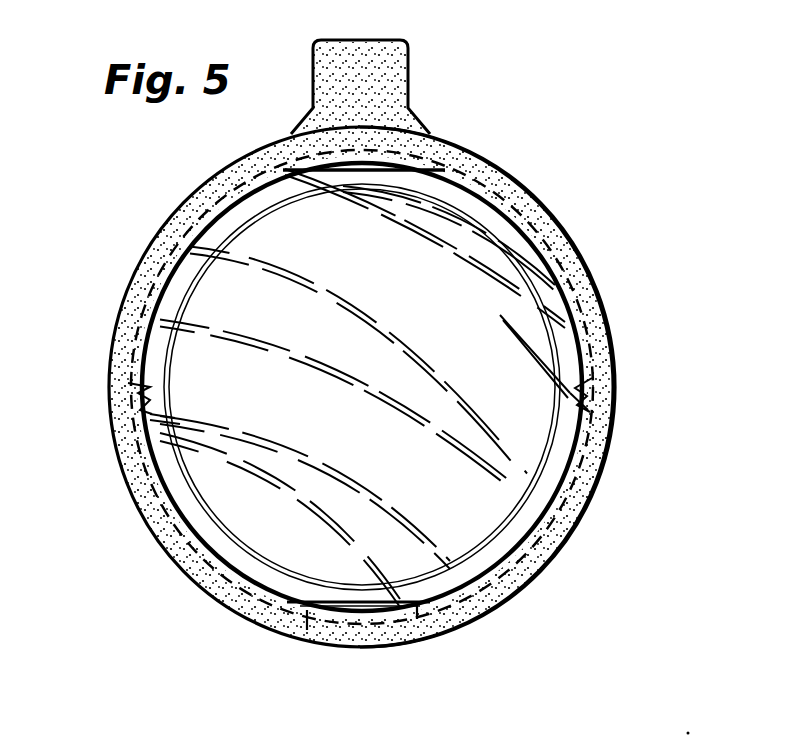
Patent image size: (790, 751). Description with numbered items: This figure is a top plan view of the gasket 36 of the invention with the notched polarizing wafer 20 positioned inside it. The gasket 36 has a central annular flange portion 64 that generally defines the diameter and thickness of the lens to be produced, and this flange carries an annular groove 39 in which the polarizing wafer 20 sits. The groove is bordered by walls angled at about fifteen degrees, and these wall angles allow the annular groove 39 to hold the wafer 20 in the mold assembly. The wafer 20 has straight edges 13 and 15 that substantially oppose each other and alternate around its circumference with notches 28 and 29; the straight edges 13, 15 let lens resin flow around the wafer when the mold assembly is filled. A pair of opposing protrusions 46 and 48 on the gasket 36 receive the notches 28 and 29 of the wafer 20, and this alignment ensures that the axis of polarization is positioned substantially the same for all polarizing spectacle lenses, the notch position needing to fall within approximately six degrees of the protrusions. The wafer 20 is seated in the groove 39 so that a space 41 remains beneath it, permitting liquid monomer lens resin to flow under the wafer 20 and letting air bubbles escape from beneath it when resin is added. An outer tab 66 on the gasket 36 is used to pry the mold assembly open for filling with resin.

The straight edge 13 is at (387, 170).
The straight edge 15 is at (320, 603).
The polarizing wafer 20 is at (465, 298).
The notch 28 is at (152, 417).
The notch 29 is at (588, 410).
The gasket 36 is at (158, 215).
The annular groove 39 is at (423, 645).
The space 41 is at (360, 607).
The protrusion 46 is at (586, 380).
The protrusion 48 is at (135, 385).
The central annular flange portion 64 is at (145, 291).
The outer tab 66 is at (327, 63).